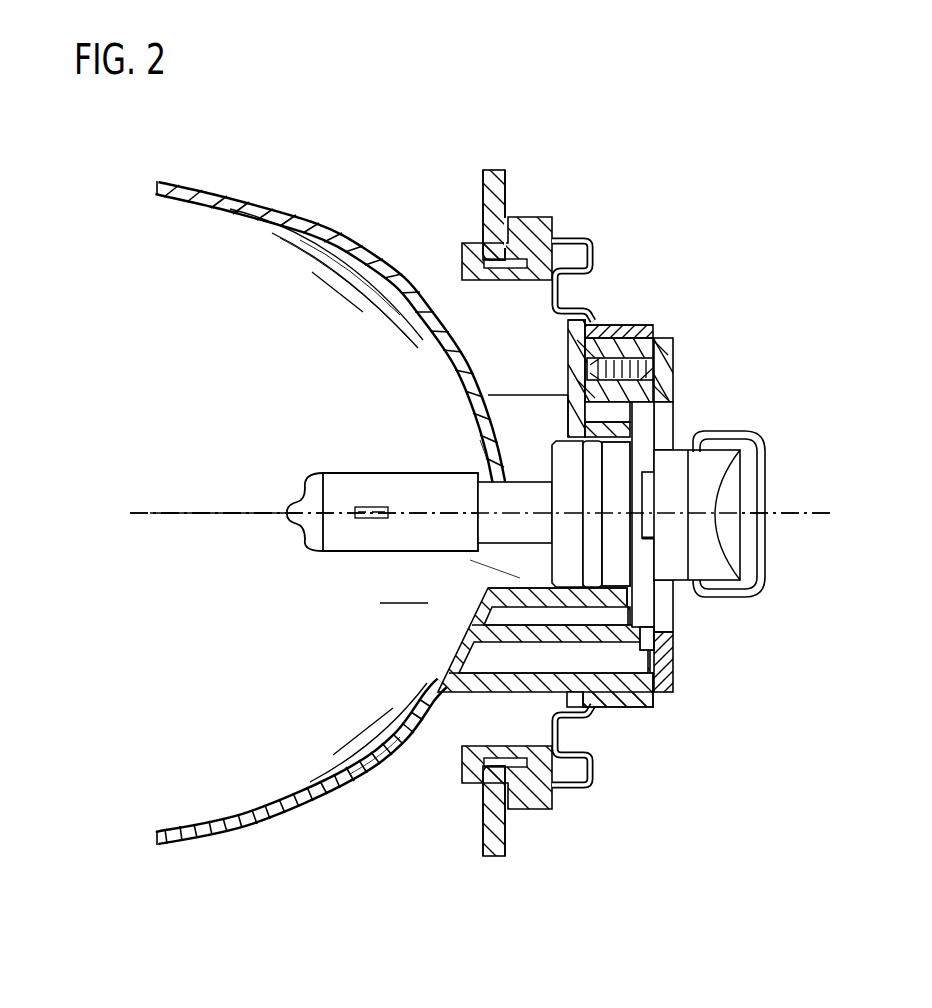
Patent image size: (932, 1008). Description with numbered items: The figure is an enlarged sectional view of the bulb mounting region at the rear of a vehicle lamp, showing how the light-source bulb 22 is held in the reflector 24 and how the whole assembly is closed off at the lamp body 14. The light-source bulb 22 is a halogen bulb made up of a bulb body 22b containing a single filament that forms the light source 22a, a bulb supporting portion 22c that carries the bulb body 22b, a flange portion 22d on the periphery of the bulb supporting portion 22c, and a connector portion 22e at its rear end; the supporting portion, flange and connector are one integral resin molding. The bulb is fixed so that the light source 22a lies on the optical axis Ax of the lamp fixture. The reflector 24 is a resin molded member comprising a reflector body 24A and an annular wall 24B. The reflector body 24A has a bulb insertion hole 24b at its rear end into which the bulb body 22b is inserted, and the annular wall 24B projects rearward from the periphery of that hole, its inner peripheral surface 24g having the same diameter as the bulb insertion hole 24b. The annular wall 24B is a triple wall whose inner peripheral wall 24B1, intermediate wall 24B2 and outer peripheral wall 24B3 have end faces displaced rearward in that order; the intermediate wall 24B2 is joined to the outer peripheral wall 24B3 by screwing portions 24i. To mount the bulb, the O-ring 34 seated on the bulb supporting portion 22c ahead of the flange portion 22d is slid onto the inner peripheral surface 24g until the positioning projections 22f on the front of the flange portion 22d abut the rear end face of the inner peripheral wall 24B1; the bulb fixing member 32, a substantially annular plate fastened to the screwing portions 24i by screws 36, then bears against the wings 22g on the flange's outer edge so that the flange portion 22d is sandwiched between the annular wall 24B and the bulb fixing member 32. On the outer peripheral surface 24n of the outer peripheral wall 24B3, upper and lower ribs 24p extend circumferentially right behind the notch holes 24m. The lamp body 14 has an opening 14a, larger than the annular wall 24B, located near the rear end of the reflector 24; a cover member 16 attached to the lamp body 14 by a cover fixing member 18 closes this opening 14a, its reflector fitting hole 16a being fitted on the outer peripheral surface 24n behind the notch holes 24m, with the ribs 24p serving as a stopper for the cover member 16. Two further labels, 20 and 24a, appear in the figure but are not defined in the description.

The lamp body 14 is at (513, 199).
The opening 14a is at (487, 268).
The cover member 16 is at (625, 318).
The reflector fitting hole 16a is at (577, 363).
The cover fixing member 18 is at (460, 247).
The vehicle lamp 20 is at (799, 221).
The light-source bulb 22 is at (560, 547).
The light source 22a is at (363, 518).
The bulb body 22b is at (383, 552).
The bulb supporting portion 22c is at (500, 470).
The flange portion 22d is at (657, 417).
The connector portion 22e is at (730, 463).
The positioning projections 22f is at (647, 440).
The wings 22g is at (648, 503).
The reflector 24 is at (530, 494).
The socket flange surface 24a is at (362, 296).
The bulb insertion hole 24b is at (488, 450).
The inner peripheral surface 24g is at (525, 578).
The screwing portions 24i is at (653, 322).
The notch holes 24m is at (513, 407).
The outer peripheral surface 24n is at (548, 692).
The ribs 24p is at (580, 321).
The reflector body 24A is at (367, 783).
The annular wall 24B is at (571, 712).
The inner peripheral wall 24B1 is at (583, 600).
The intermediate wall 24B2 is at (612, 632).
The outer peripheral wall 24B3 is at (640, 680).
The bulb fixing member 32 is at (676, 668).
The O-ring 34 is at (637, 577).
The screws 36 is at (667, 367).
The optical axis Ax is at (180, 510).